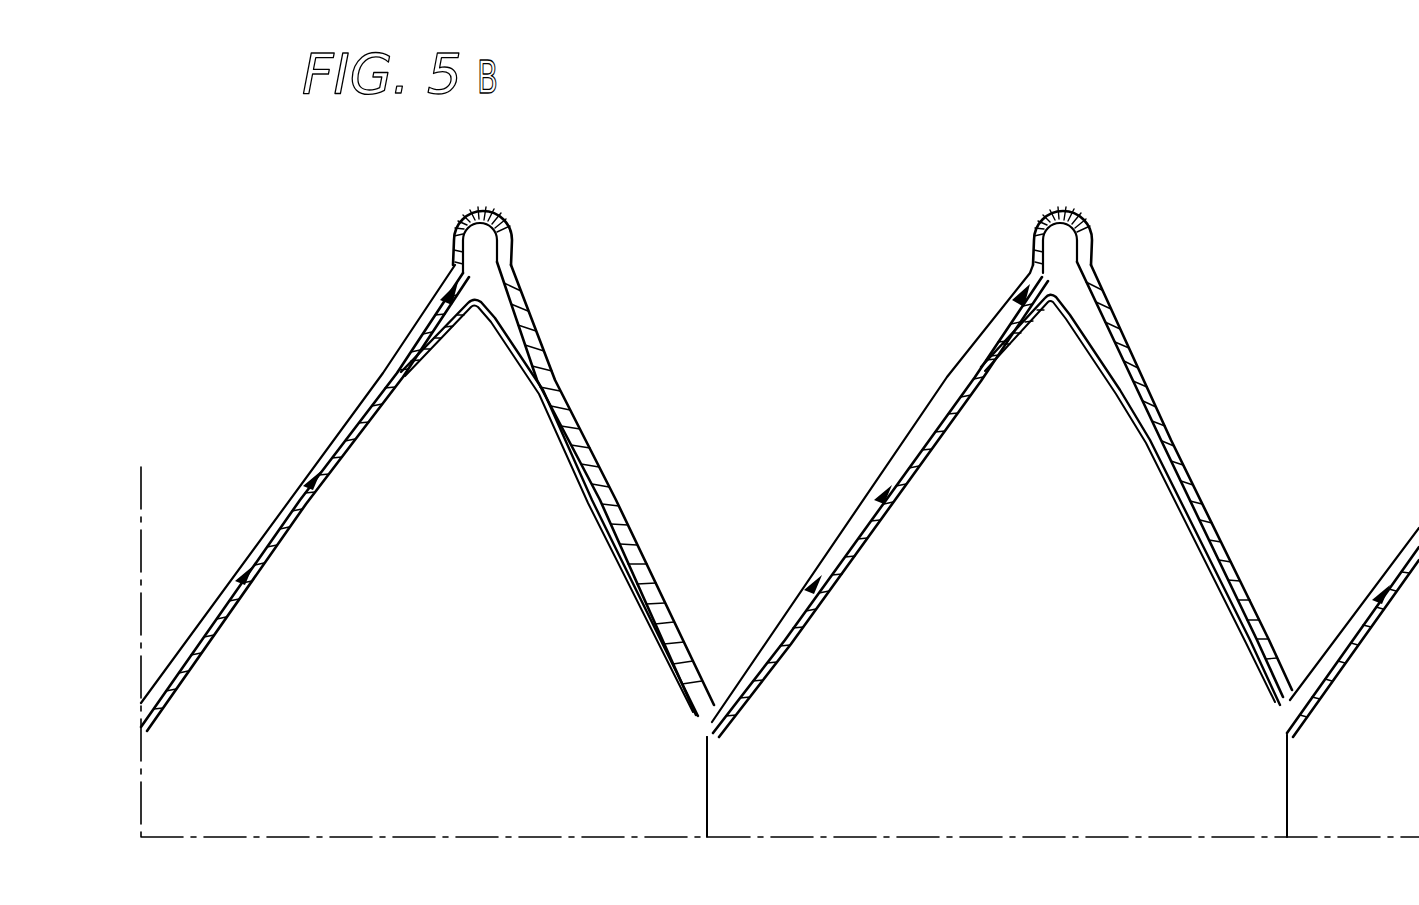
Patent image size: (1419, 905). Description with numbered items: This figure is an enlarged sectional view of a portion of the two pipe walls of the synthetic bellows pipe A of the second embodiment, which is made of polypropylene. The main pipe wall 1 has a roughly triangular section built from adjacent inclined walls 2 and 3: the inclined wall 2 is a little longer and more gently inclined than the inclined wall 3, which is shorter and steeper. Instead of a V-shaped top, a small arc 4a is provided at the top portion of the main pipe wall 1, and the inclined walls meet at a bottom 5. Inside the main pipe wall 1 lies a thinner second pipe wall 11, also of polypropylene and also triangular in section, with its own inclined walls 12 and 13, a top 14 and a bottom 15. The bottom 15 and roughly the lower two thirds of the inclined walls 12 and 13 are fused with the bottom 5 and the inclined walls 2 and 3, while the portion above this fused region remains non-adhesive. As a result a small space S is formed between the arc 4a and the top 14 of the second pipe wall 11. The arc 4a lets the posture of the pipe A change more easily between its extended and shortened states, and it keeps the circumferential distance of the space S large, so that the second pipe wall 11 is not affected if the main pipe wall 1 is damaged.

The main pipe wall 1 is at (875, 112).
The inclined wall 2 is at (968, 355).
The inclined wall 3 is at (1124, 358).
The small arc 4a is at (1059, 215).
The bottom 5 is at (1288, 695).
The second pipe wall 11 is at (633, 717).
The inclined wall 12 is at (288, 532).
The inclined wall 13 is at (630, 576).
The top 14 is at (470, 308).
The bottom 15 is at (703, 735).
The synthetic bellows pipe A is at (355, 391).
The small space S is at (491, 240).